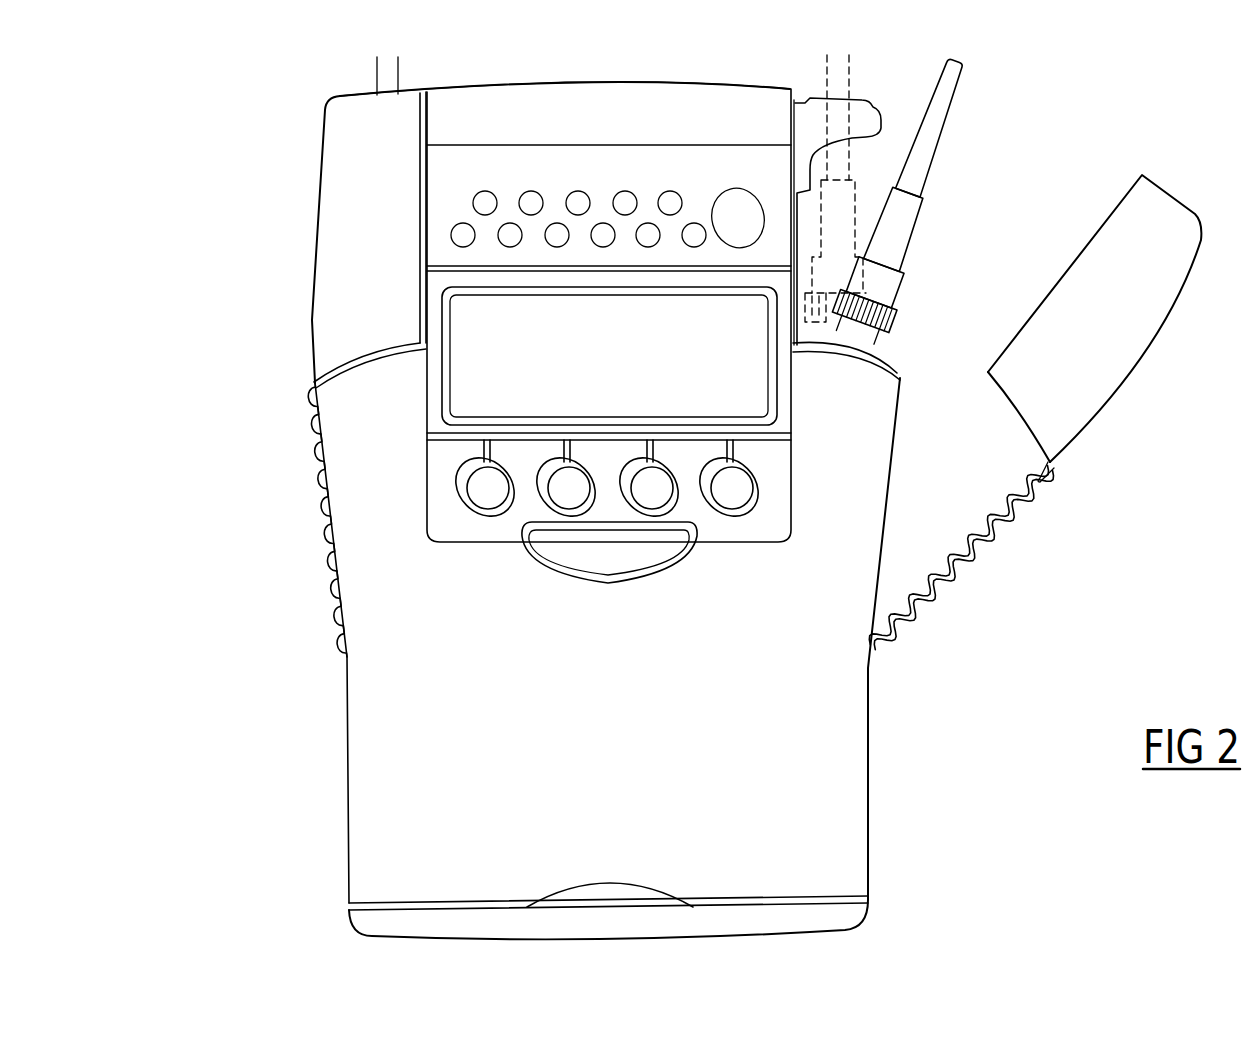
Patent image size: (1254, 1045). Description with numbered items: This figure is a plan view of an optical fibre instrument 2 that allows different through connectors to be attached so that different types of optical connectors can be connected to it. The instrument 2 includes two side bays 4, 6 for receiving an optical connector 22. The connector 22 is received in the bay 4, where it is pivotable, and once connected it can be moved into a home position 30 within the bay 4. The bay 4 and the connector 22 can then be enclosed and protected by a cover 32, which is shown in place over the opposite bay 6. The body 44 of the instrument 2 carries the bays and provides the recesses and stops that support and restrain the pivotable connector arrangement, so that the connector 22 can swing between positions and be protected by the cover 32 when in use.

The optical fibre instrument 2 is at (604, 498).
The side bay 4 is at (927, 233).
The side bay 6 is at (347, 276).
The optical connector 22 is at (888, 288).
The home position 30 is at (857, 187).
The cover 32 is at (757, 371).
The body 44 is at (838, 405).